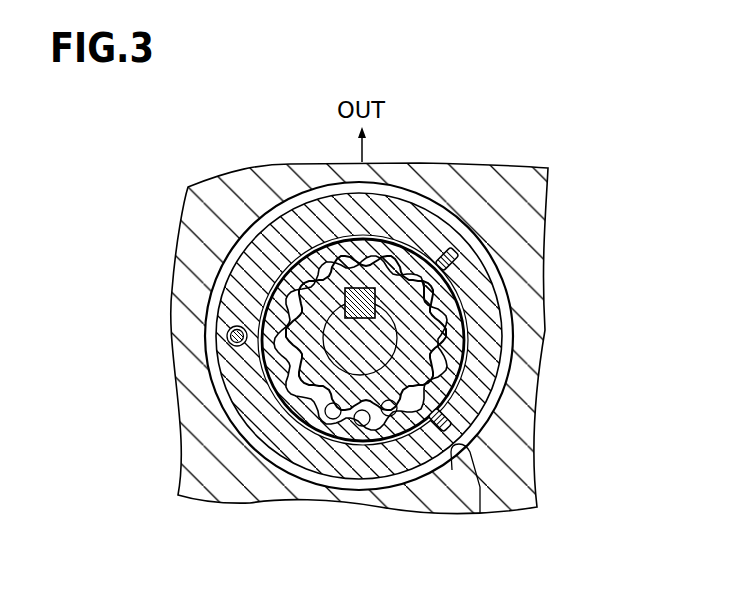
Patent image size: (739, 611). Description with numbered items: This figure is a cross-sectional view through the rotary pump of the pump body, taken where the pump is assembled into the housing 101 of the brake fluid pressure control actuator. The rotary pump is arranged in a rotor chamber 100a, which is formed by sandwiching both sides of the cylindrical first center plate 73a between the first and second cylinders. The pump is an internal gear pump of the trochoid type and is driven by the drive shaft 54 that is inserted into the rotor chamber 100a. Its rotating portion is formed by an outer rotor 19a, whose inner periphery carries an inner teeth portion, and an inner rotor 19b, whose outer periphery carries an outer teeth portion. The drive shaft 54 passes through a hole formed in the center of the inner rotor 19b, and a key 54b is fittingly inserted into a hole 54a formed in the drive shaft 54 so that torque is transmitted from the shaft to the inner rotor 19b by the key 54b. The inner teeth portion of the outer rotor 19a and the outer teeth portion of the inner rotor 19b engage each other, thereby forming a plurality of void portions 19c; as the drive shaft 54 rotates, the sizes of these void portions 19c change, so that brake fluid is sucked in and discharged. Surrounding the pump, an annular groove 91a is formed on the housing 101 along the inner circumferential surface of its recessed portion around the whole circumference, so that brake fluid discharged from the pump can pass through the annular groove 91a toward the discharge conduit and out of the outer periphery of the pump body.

The housing 101 is at (547, 217).
The annular groove 91a is at (480, 513).
The first center plate 73a is at (466, 330).
The outer rotor 19a is at (313, 427).
The inner rotor 19b is at (400, 395).
The void portions 19c is at (305, 400).
The drive shaft 54 is at (370, 355).
The hole 54a is at (367, 300).
The key 54b is at (425, 291).
The rotor chamber 100a is at (465, 388).